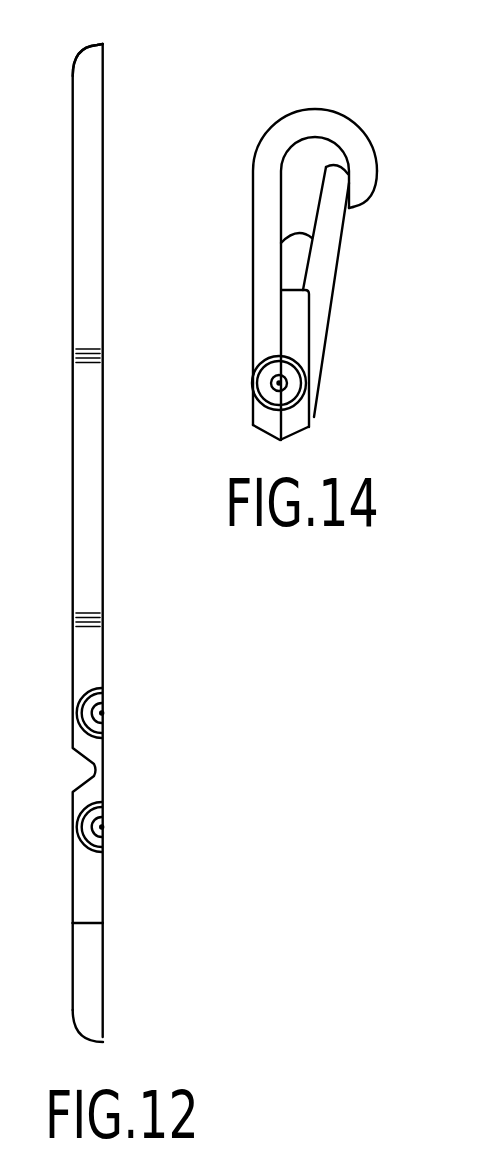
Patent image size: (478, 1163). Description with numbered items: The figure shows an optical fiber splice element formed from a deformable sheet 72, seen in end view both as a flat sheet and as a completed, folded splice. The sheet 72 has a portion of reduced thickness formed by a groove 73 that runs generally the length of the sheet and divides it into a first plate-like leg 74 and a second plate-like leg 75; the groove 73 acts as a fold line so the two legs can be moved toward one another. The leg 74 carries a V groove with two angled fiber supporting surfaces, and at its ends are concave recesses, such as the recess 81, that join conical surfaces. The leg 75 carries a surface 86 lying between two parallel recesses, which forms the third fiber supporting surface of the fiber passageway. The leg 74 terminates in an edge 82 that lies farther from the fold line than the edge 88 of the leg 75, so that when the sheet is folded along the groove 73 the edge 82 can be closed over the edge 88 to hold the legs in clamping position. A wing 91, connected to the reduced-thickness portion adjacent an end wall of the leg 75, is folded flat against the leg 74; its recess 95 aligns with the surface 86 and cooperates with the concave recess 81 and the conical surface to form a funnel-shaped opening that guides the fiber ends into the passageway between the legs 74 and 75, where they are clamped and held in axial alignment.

In FIG. 12, the sheet 72 is at (70, 426).
In FIG. 14, the sheet 72 is at (287, 108).
In FIG. 14, the groove 73 is at (267, 433).
In FIG. 12, the first plate-like member or leg 74 is at (98, 288).
In FIG. 14, the first plate-like member or leg 74 is at (265, 243).
In FIG. 12, the second plate-like member or leg 75 is at (98, 971).
In FIG. 14, the second plate-like member or leg 75 is at (336, 260).
In FIG. 12, the concave recess 81 is at (104, 728).
In FIG. 14, the concave recess 81 is at (255, 383).
In FIG. 12, the edge 82 is at (102, 44).
In FIG. 14, the edge 82 is at (353, 207).
In FIG. 12, the surface 86 is at (105, 827).
In FIG. 12, the edge 88 is at (103, 1042).
In FIG. 14, the edge 88 is at (340, 163).
In FIG. 14, the wing 91 is at (309, 320).
In FIG. 12, the recess 95 is at (103, 847).
In FIG. 14, the recess 95 is at (298, 383).